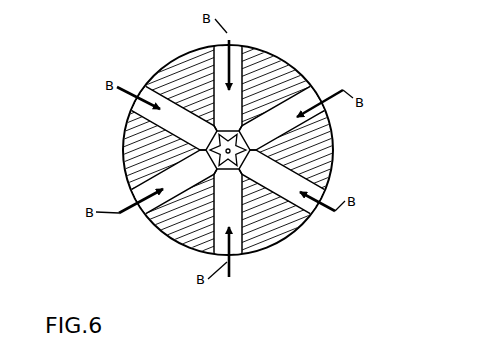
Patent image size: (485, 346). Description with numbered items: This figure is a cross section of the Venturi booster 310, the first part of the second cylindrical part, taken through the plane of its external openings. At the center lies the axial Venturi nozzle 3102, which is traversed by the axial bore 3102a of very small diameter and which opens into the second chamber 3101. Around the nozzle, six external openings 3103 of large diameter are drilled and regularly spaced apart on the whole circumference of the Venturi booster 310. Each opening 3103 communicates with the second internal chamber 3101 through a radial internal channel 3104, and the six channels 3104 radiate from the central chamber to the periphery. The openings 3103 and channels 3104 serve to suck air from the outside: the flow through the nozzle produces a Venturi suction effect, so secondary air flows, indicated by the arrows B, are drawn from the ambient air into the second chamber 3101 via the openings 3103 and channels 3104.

The Venturi booster 310 is at (327, 139).
The second chamber 3101 is at (245, 172).
The axial Venturi nozzle 3102 is at (175, 110).
The axial bore 3102a is at (152, 210).
The external openings 3103 is at (244, 35).
The radial internal channel 3104 is at (331, 37).